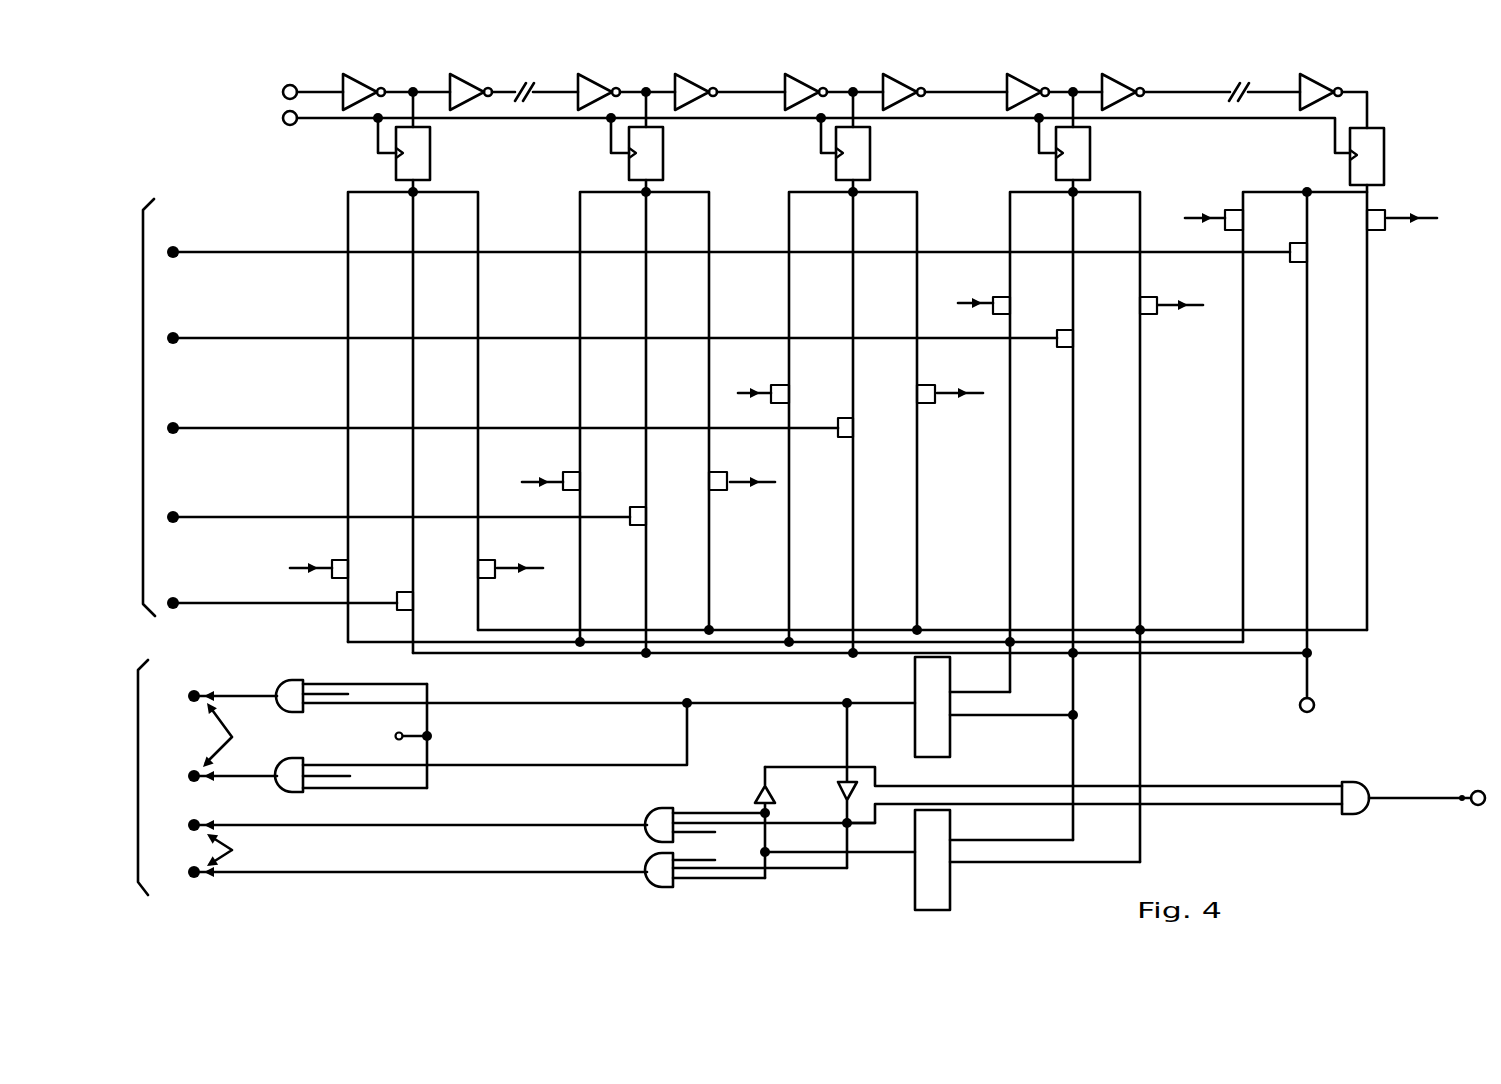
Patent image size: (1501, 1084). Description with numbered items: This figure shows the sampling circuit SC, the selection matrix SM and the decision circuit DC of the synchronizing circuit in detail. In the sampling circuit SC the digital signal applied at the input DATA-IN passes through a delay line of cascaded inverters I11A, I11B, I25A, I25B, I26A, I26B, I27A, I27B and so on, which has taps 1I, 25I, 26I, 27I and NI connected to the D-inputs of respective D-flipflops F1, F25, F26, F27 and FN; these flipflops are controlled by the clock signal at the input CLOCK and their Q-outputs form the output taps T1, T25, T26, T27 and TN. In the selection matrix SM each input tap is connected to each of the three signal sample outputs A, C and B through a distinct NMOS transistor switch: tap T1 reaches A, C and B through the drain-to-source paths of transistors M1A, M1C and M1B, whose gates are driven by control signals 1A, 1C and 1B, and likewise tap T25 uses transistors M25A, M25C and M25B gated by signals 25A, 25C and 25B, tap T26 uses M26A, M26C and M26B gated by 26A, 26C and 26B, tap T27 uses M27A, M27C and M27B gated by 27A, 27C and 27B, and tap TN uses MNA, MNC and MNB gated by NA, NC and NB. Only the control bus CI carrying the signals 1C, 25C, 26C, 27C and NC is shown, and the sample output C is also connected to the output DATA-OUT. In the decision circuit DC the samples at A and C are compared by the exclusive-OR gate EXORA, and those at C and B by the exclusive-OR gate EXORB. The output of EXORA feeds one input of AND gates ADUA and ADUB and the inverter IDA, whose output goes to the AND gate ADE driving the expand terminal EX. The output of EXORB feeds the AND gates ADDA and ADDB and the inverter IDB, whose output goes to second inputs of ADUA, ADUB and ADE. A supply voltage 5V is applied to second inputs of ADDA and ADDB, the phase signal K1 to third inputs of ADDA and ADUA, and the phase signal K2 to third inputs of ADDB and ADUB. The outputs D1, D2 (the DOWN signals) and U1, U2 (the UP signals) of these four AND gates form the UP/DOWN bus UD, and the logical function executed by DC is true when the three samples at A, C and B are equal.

The data input DATA-IN is at (253, 83).
The clock input CLOCK is at (771, 132).
The sampling circuit SC is at (1388, 116).
The inverter I11A is at (357, 77).
The inverter I11B is at (510, 77).
The inverter I25A is at (587, 77).
The inverter I25B is at (722, 77).
The inverter I26A is at (791, 77).
The inverter I26B is at (941, 77).
The inverter I27A is at (1022, 77).
The inverter I27B is at (1200, 77).
The delay line tap 1I is at (417, 82).
The delay line tap 25I is at (647, 82).
The delay line tap 26I is at (855, 82).
The delay line tap 27I is at (1073, 82).
The delay line tap NI is at (1353, 100).
The D-flipflop F1 is at (440, 149).
The D-flipflop F25 is at (673, 149).
The D-flipflop F26 is at (880, 149).
The D-flipflop F27 is at (1100, 149).
The D-flipflop FN is at (1394, 151).
The selection matrix SM is at (1383, 441).
The output tap T1 is at (413, 420).
The output tap T25 is at (644, 420).
The output tap T26 is at (853, 420).
The output tap T27 is at (1075, 420).
The output tap TN is at (1305, 410).
The signal sample output A is at (922, 732).
The signal sample output B is at (795, 647).
The signal sample output C is at (862, 744).
The data output DATA-OUT is at (1344, 687).
The input control bus CI is at (128, 407).
The control signal NC is at (725, 254).
The control signal 27C is at (607, 340).
The control signal 26C is at (499, 432).
The control signal 25C is at (394, 520).
The control signal 1C is at (282, 606).
The NMOS transistor M1A is at (458, 570).
The NMOS transistor M1B is at (369, 570).
The NMOS transistor M1C is at (431, 602).
The control signal 1A is at (520, 556).
The control signal 1B is at (311, 558).
The NMOS transistor M25A is at (689, 482).
The NMOS transistor M25B is at (605, 482).
The NMOS transistor M25C is at (670, 518).
The control signal 25A is at (749, 468).
The control signal 25B is at (541, 470).
The NMOS transistor M26A is at (897, 395).
The NMOS transistor M26B is at (812, 395).
The NMOS transistor M26C is at (879, 431).
The control signal 26A is at (955, 379).
The control signal 26B is at (760, 379).
The NMOS transistor M27A is at (1117, 310).
The NMOS transistor M27B is at (1034, 310).
The NMOS transistor M27C is at (1097, 342).
The control signal 27A is at (1175, 291).
The control signal 27B is at (980, 290).
The NMOS transistor MNA is at (1352, 222).
The NMOS transistor MNB is at (1263, 222).
The NMOS transistor MNC is at (1326, 255).
The control signal NA is at (1412, 208).
The control signal NB is at (1205, 208).
The UP/DOWN bus UD is at (124, 777).
The output D1 is at (210, 697).
The output D2 is at (210, 779).
The output U1 is at (395, 829).
The output U2 is at (395, 874).
The down signals DOWN is at (254, 735).
The up signals UP is at (234, 850).
The AND gate ADDA is at (588, 682).
The AND gate ADDB is at (477, 764).
The AND gate ADUA is at (729, 821).
The AND gate ADUB is at (715, 866).
The phase signal K1 is at (525, 764).
The phase signal K2 is at (525, 819).
The supply voltage 5V is at (397, 736).
The inverter IDA is at (740, 822).
The inverter IDB is at (769, 783).
The decision circuit DC is at (1276, 816).
The exclusive-OR gate EXORA is at (952, 860).
The exclusive-OR gate EXORB is at (996, 707).
The AND gate ADE is at (1401, 783).
The expand terminal EX is at (1467, 814).